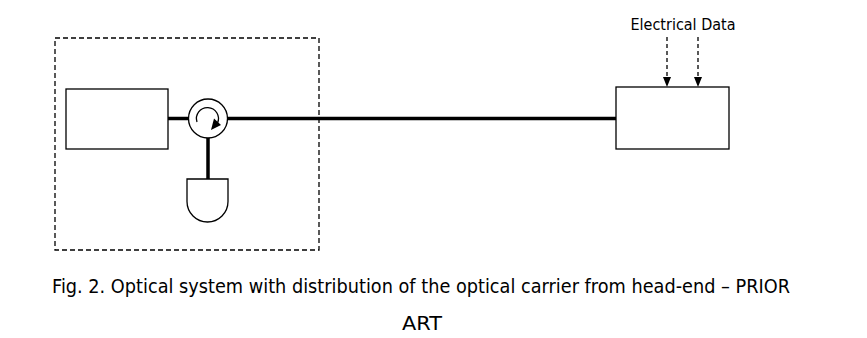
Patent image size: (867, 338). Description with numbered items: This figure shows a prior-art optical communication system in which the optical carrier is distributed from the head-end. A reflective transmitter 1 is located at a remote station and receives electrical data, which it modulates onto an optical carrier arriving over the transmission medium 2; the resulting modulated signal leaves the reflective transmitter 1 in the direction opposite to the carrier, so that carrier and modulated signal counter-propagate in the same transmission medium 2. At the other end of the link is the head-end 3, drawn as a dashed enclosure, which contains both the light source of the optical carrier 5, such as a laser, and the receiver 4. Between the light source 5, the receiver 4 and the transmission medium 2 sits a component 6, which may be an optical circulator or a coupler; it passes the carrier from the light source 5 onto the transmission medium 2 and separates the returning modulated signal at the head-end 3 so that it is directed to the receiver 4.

The reflective optical transmitter 1 is at (672, 118).
The transmission medium 2 is at (422, 107).
The head-end 3 is at (187, 144).
The receiver 4 is at (207, 180).
The light source of the optical carrier 5 is at (127, 119).
The component for separating the modulated signal 6 is at (208, 107).